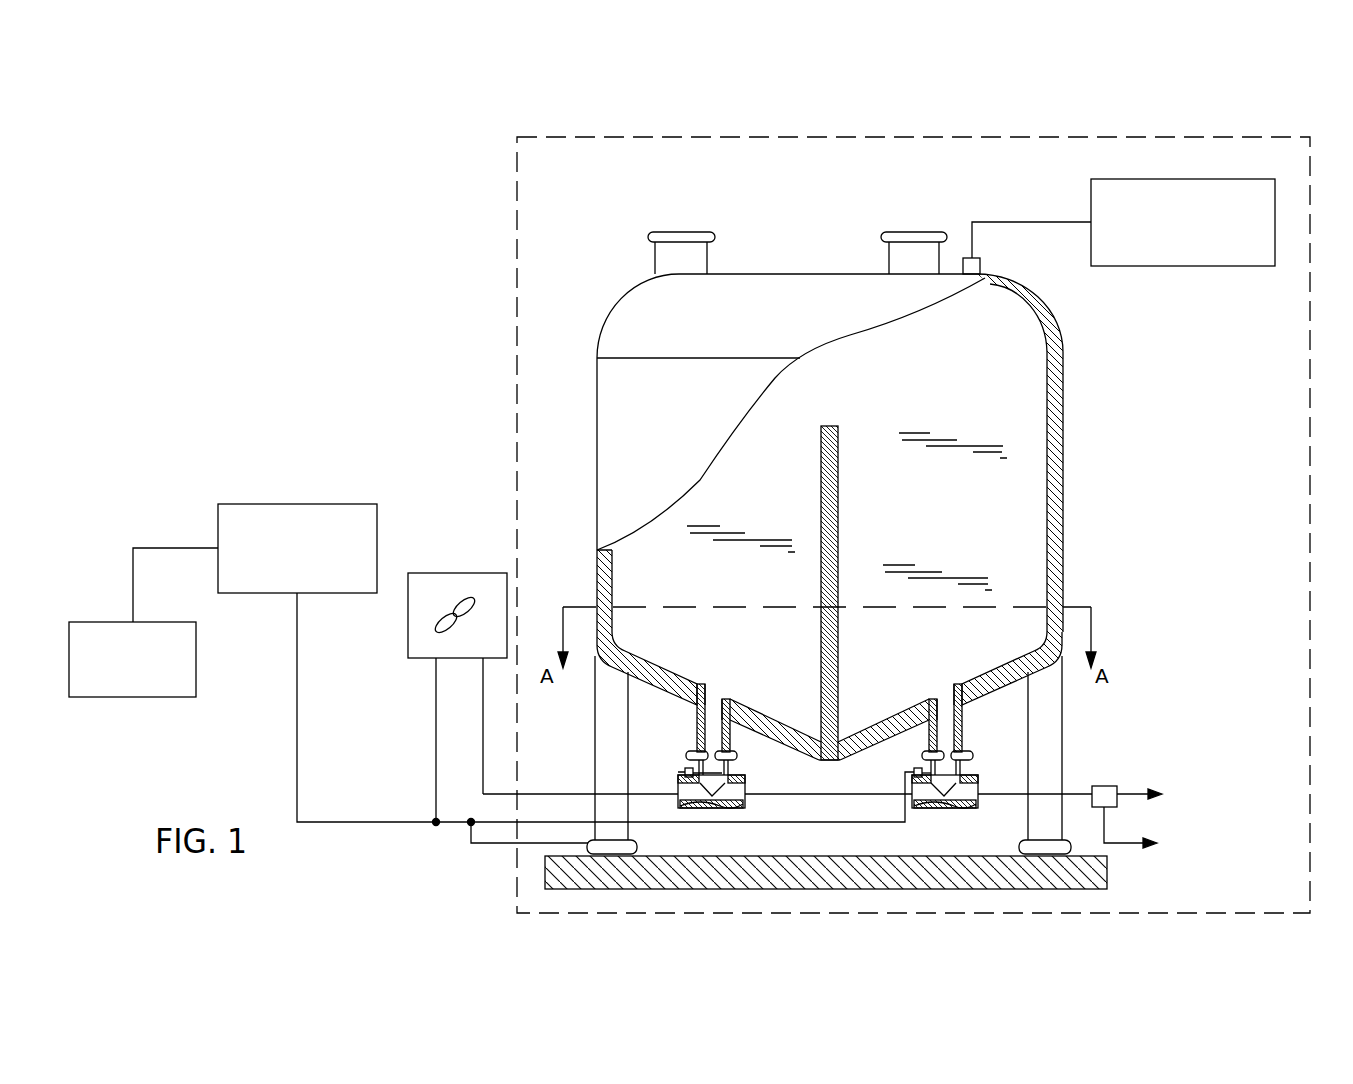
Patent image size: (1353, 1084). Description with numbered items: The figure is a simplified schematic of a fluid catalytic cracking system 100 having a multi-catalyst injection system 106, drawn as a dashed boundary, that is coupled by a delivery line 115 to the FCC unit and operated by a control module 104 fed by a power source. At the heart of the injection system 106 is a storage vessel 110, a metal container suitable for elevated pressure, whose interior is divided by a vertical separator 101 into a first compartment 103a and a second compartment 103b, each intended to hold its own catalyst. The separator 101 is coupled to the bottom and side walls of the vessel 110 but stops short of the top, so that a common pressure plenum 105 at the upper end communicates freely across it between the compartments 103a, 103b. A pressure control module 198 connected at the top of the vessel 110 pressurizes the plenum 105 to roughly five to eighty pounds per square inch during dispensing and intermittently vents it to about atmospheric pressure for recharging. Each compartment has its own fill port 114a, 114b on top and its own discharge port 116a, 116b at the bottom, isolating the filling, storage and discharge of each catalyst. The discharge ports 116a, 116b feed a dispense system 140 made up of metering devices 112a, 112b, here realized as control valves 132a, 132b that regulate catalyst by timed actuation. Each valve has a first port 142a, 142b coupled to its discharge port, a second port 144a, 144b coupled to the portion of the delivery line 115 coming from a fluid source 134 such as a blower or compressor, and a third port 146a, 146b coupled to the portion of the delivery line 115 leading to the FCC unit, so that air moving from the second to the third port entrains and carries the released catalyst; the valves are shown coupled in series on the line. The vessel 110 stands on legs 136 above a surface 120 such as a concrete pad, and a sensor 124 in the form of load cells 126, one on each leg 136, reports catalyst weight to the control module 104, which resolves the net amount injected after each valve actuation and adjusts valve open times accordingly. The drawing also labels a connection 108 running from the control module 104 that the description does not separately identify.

The fluid catalytic cracking system 100 is at (1121, 124).
The separator 101 is at (828, 426).
The first compartment 103a is at (772, 512).
The second compartment 103b is at (986, 527).
The control module 104 is at (310, 504).
The pressure plenum 105 is at (851, 381).
The multi-catalyst injection system 106 is at (517, 240).
The control line 108 is at (538, 792).
The storage vessel 110 is at (597, 452).
The first metering device 112a is at (697, 722).
The second metering device 112b is at (962, 722).
The first fill port 114a is at (674, 232).
The second fill port 114b is at (906, 232).
The delivery line 115 is at (1125, 790).
The first discharge port 116a is at (713, 700).
The second discharge port 116b is at (943, 695).
The surface 120 is at (722, 856).
The sensor 124 is at (637, 818).
The load cells 126 is at (637, 848).
The first control valve 132a is at (728, 788).
The second control valve 132b is at (958, 788).
The fluid source 134 is at (445, 573).
The legs 136 is at (613, 757).
The dispense system 140 is at (920, 820).
The first port of first control valve 142a is at (732, 752).
The first port of second control valve 142b is at (952, 748).
The second port of first control valve 144a is at (716, 806).
The second port of second control valve 144b is at (950, 806).
The third port of first control valve 146a is at (748, 792).
The third port of second control valve 146b is at (980, 787).
The pressure control module 198 is at (1185, 266).